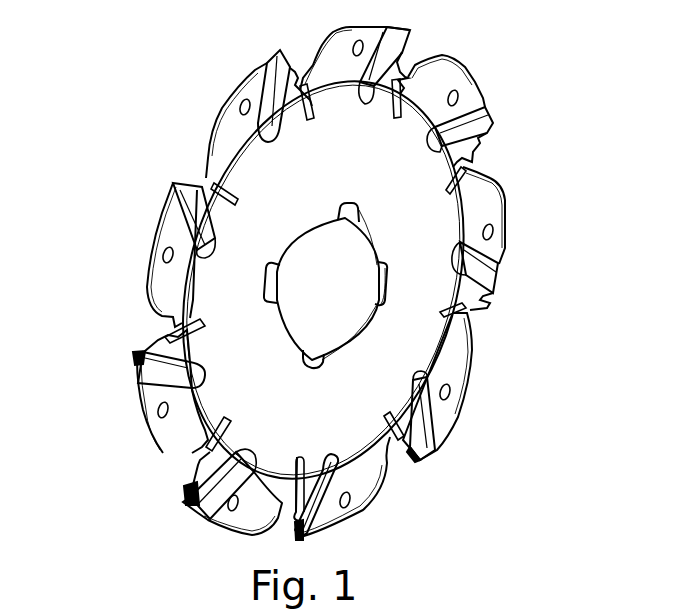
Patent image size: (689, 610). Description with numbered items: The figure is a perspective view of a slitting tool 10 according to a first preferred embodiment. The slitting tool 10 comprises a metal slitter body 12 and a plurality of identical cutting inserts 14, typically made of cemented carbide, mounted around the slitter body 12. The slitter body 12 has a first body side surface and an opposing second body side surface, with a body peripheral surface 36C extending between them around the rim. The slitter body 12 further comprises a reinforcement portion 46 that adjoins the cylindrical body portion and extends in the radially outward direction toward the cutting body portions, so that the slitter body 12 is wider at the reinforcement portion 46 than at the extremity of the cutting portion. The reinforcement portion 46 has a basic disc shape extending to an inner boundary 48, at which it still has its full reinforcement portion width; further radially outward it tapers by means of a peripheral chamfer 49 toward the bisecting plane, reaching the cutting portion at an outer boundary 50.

The slitting tool 10 is at (143, 63).
The slitter body 12 is at (427, 334).
The cutting insert 14 is at (438, 462).
The body peripheral surface 36C is at (152, 437).
The reinforcement portion 46 is at (193, 300).
The inner boundary 48 is at (222, 223).
The peripheral chamfer 49 is at (185, 319).
The outer boundary 50 is at (208, 205).